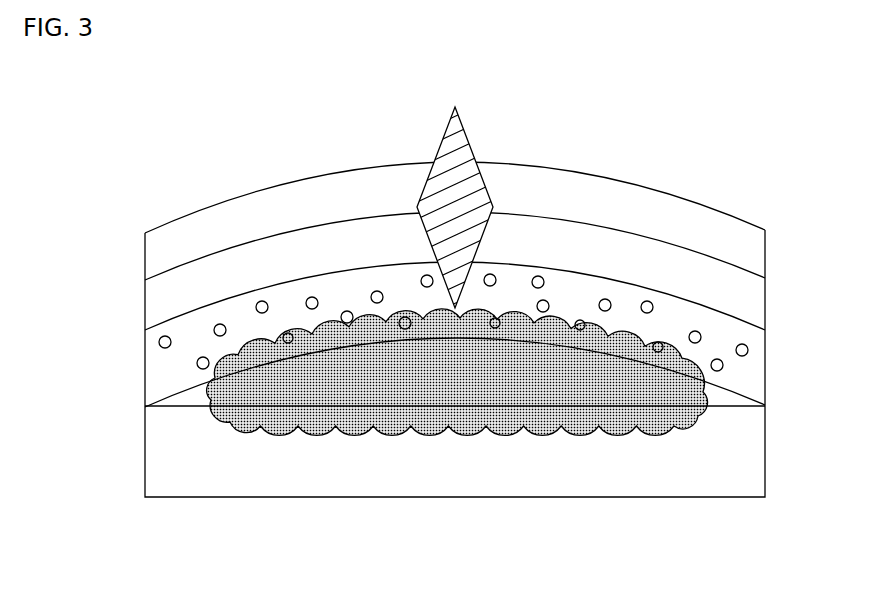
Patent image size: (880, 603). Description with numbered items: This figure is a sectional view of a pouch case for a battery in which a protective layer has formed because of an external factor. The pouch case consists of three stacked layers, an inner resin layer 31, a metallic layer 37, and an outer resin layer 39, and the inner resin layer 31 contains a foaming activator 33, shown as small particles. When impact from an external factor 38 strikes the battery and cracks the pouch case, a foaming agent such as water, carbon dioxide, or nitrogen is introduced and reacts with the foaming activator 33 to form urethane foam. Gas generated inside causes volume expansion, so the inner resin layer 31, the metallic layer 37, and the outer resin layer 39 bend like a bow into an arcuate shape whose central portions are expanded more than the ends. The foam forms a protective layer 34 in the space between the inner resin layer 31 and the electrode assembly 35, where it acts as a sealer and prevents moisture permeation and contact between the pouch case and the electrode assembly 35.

The inner resin layer 31 is at (752, 380).
The foaming activator 33 is at (748, 349).
The protective layer 34 is at (428, 418).
The electrode assembly 35 is at (752, 453).
The metallic layer 37 is at (752, 298).
The external factor 38 is at (460, 152).
The outer resin layer 39 is at (752, 248).